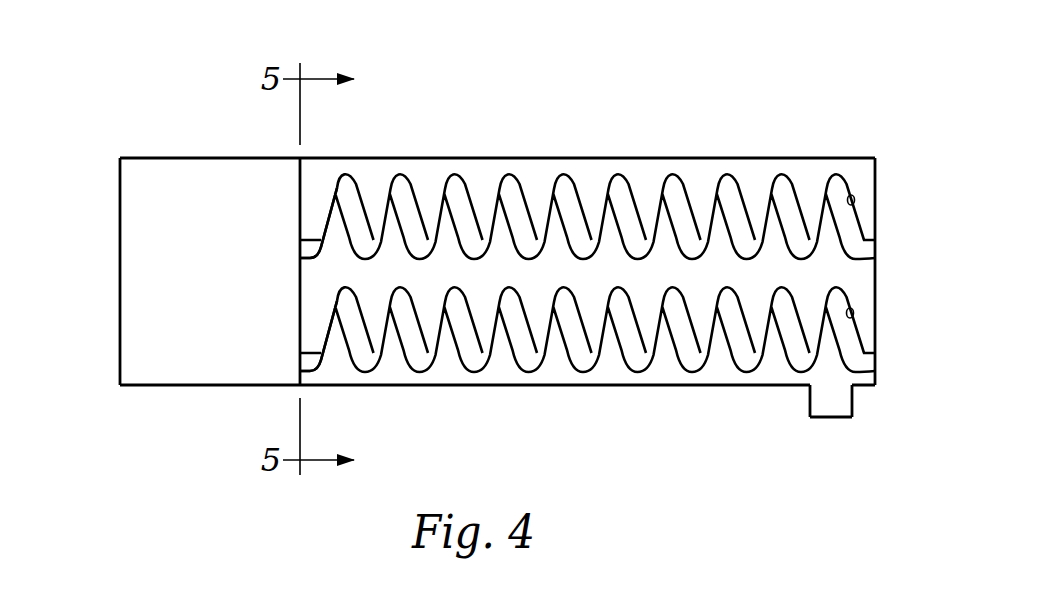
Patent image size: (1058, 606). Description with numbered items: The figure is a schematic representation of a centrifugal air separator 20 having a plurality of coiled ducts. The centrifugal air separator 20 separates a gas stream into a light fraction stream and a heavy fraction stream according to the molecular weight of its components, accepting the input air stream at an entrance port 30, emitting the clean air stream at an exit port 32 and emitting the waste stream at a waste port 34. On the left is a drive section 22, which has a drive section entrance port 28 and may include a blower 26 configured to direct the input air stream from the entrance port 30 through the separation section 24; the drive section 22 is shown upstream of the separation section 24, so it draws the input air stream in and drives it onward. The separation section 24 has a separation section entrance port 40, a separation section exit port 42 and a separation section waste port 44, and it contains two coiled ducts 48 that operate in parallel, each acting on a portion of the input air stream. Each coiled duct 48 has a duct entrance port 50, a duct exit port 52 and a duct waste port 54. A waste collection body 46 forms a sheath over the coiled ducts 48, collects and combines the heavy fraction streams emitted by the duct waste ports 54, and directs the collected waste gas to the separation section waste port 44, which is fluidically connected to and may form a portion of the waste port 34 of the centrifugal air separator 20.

The centrifugal air separator 20 is at (124, 44).
The drive section 22 is at (155, 152).
The separation section 24 is at (460, 151).
The blower 26 is at (260, 157).
The drive section entrance port 28 is at (118, 312).
The entrance port 30 is at (102, 236).
The exit port 32 is at (904, 175).
The waste port 34 is at (843, 426).
The separation section entrance port 40 is at (297, 293).
The separation section exit port 42 is at (905, 232).
The separation section waste port 44 is at (805, 408).
The waste collection body 46 is at (690, 157).
The coiled duct 48 is at (314, 168).
The duct entrance port 50 is at (299, 241).
The duct exit port 52 is at (877, 358).
The duct waste port 54 is at (857, 195).